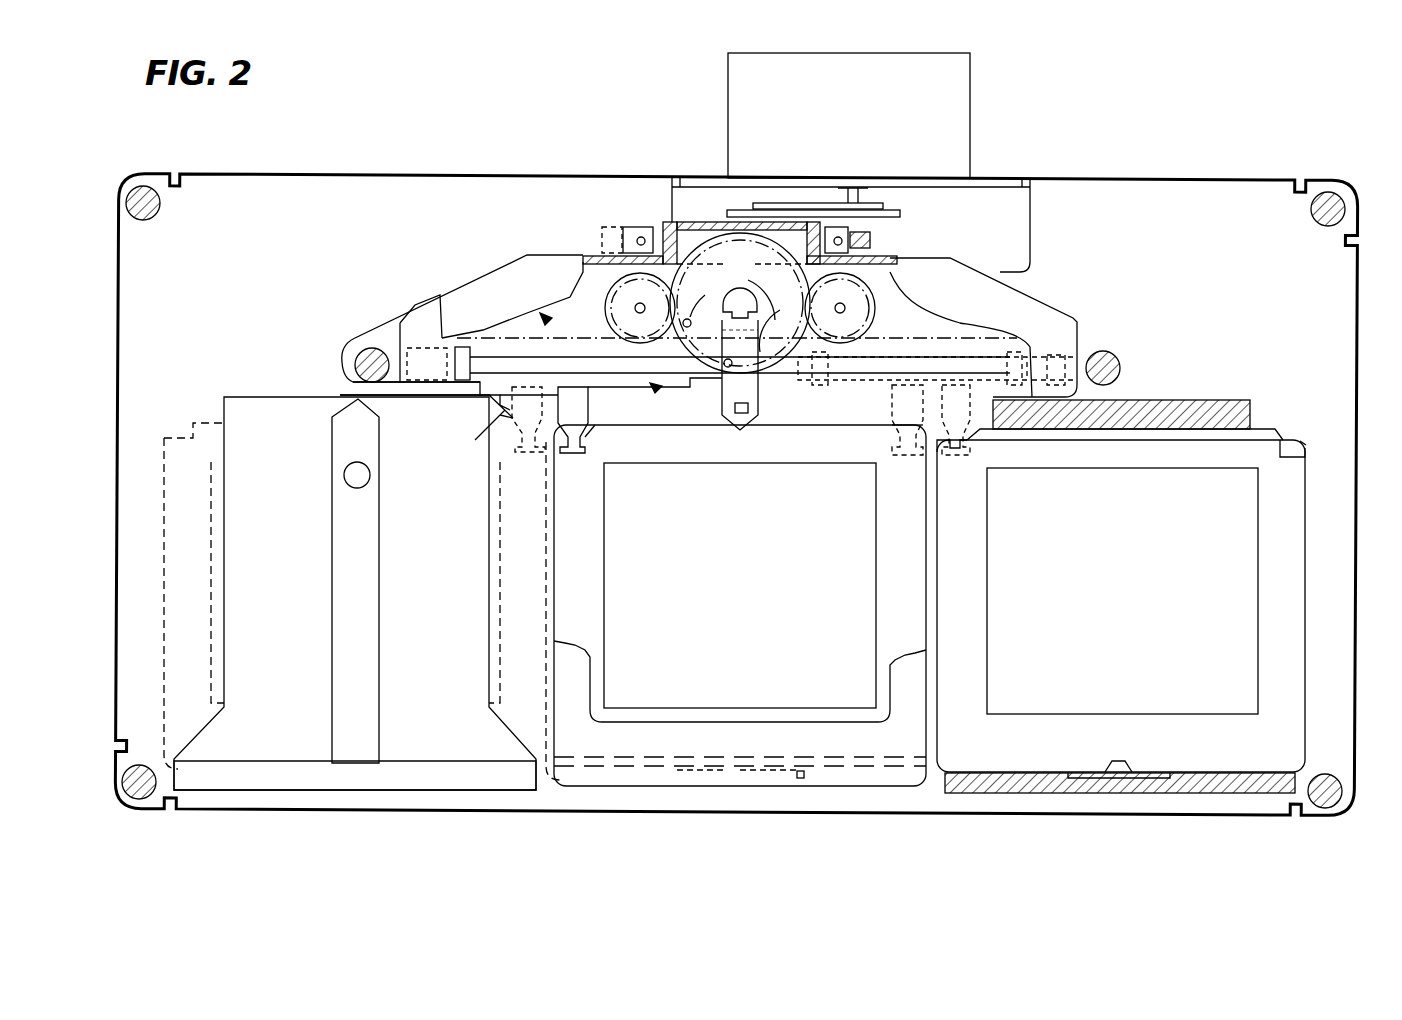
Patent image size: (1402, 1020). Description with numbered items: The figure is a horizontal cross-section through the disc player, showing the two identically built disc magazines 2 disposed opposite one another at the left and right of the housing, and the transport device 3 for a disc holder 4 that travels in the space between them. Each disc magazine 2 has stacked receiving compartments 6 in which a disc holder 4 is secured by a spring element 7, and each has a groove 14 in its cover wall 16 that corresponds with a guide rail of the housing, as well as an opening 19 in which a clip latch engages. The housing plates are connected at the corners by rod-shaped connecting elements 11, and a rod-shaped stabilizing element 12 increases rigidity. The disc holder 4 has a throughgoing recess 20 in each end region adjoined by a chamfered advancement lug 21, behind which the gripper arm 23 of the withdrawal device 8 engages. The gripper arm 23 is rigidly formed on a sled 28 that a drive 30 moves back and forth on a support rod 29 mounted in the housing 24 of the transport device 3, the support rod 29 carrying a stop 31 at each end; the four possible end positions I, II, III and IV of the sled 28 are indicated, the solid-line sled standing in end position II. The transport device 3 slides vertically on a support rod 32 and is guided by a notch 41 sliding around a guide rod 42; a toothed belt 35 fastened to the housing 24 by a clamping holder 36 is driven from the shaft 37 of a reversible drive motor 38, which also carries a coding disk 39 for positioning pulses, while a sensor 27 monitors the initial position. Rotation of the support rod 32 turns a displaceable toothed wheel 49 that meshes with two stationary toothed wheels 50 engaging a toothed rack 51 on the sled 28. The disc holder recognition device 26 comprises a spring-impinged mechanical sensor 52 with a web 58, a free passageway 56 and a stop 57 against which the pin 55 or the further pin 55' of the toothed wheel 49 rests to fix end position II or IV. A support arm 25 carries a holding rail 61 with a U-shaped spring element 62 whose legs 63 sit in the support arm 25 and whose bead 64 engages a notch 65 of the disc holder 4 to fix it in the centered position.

The disc magazine 2 is at (428, 790).
The transport device 3 is at (1043, 290).
The disc holder 4 is at (170, 515).
The receiving compartment 6 is at (1018, 795).
The spring element 7 is at (1130, 775).
The withdrawal device 8 is at (655, 393).
The connecting element 11 is at (158, 220).
The stabilizing element 12 is at (1115, 360).
The groove 14 is at (345, 592).
The cover wall 16 is at (355, 593).
The opening 19 is at (345, 476).
The recess 20 is at (525, 440).
The advancement lug 21 is at (545, 465).
The gripper arm 23 is at (588, 405).
The housing of the transport device 24 is at (458, 320).
The support arm 25 is at (617, 778).
The disc holder recognition device 26 is at (775, 395).
The sensor 27 is at (648, 226).
The sled 28 is at (465, 395).
The support rod 29 is at (422, 335).
The drive 30 is at (545, 325).
The stop 31 is at (400, 330).
The support rod 32 is at (740, 288).
The toothed belt 35 is at (872, 243).
The clamping holder 36 is at (836, 226).
The shaft 37 is at (853, 196).
The drive motor 38 is at (950, 95).
The coding disk 39 is at (965, 214).
The notch 41 is at (395, 390).
The guide rod 42 is at (360, 365).
The toothed wheel 49 is at (716, 250).
The toothed wheel 50 is at (633, 292).
The toothed rack 51 is at (482, 332).
The sensor 52 is at (728, 428).
The pin 55 is at (765, 314).
The pin 55' is at (700, 299).
The free passageway 56 is at (756, 370).
The stop 57 is at (758, 425).
The web 58 is at (742, 414).
The holding rail 61 is at (886, 762).
The spring element 62 is at (765, 770).
The leg 63 is at (805, 775).
The bead 64 is at (727, 770).
The notch 65 is at (1125, 762).
The end position I is at (978, 460).
The end position II is at (588, 432).
The end position III is at (505, 420).
The end position IV is at (890, 437).